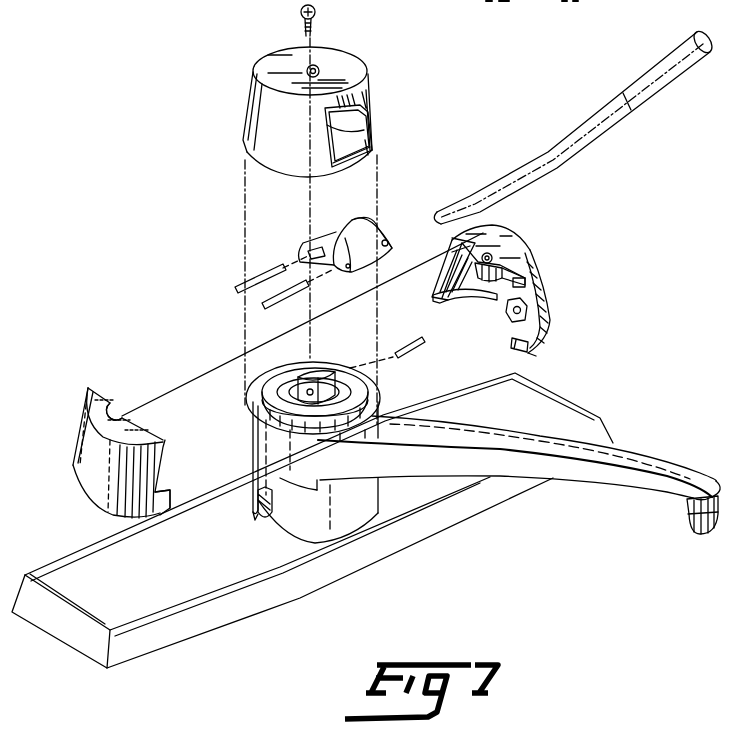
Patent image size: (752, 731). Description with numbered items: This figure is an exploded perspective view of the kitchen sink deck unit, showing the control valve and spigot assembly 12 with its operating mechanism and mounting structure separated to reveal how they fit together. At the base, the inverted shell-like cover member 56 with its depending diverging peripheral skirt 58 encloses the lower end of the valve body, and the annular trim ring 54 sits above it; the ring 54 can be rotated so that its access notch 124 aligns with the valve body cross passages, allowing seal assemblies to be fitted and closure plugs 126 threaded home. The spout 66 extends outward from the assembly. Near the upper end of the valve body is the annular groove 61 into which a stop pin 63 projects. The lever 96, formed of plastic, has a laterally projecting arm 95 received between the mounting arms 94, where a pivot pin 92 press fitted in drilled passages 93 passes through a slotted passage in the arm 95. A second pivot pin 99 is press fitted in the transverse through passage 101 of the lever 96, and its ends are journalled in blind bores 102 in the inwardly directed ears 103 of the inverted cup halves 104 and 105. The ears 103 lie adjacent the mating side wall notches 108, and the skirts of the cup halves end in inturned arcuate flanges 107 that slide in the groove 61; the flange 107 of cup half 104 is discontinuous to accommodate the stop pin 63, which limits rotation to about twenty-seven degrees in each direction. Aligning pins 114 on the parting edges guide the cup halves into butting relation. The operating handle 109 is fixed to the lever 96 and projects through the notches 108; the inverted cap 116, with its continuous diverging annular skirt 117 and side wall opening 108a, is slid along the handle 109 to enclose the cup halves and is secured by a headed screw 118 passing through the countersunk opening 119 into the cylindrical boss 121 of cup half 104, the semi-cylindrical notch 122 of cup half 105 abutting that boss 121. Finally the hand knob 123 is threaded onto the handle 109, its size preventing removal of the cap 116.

The control valve and spigot assembly 12 is at (291, 443).
The annular brass trim ring 54 is at (252, 490).
The cover member 56 is at (312, 534).
The peripheral skirt 58 is at (60, 646).
The annular groove 61 is at (519, 457).
The stop pin 63 is at (414, 352).
The spout 66 is at (590, 486).
The pivot pin 92 is at (238, 284).
The drilled passages 93 is at (308, 400).
The mounting arms 94 is at (318, 399).
The arm 95 is at (326, 275).
The lever 96 is at (340, 275).
The pivot pin 99 is at (278, 298).
The transverse through passage 101 is at (350, 272).
The blind bores 102 is at (514, 322).
The ears 103 is at (512, 310).
The cup half 104 is at (494, 298).
The cup half 105 is at (118, 443).
The inturned arcuate flanges 107 is at (462, 303).
The side wall notches 108 is at (542, 330).
The side wall opening 108a is at (372, 118).
The operating handle 109 is at (574, 126).
The aligning pins 114 is at (527, 284).
The cap 116 is at (316, 97).
The annular skirt 117 is at (250, 118).
The headed screw 118 is at (316, 22).
The countersunk opening 119 is at (320, 70).
The cylindrical boss 121 is at (455, 258).
The semi-cylindrical notch 122 is at (122, 413).
The hand knob 123 is at (668, 82).
The access notch 124 is at (272, 502).
The closure plugs 126 is at (263, 508).